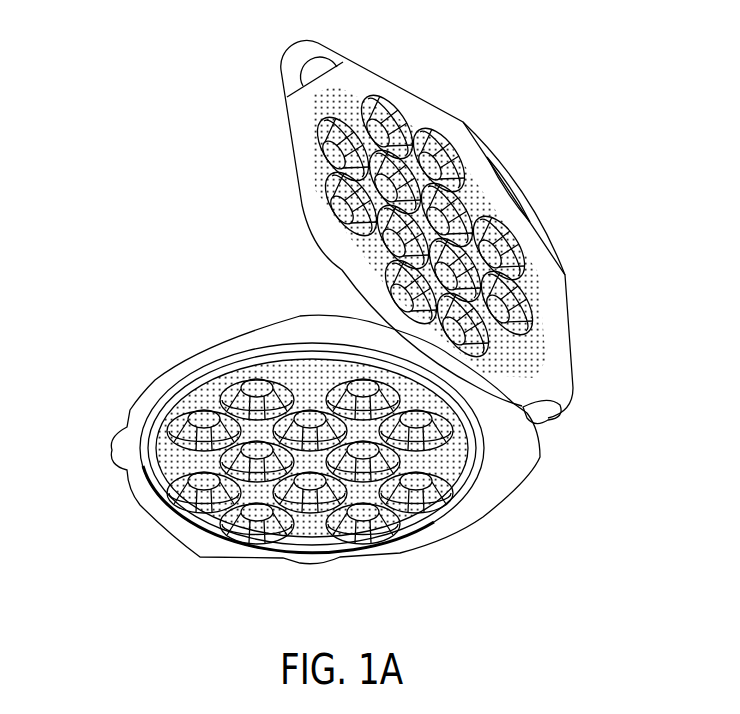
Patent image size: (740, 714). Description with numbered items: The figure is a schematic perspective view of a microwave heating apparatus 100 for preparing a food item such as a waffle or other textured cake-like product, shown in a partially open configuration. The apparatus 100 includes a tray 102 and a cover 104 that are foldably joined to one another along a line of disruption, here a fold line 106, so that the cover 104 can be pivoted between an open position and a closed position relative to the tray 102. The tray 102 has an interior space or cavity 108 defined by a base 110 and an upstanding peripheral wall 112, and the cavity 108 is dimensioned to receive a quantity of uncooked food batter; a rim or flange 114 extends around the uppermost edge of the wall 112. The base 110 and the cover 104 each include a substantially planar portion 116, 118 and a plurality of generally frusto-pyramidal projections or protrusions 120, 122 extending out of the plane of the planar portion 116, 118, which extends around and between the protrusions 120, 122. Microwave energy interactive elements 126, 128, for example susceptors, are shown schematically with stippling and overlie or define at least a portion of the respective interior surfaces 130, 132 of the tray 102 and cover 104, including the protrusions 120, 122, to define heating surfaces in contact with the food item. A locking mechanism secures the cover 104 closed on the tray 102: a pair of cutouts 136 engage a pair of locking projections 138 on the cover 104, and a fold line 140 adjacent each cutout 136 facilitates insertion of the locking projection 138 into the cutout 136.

The microwave heating apparatus 100 is at (612, 108).
The tray 102 is at (128, 300).
The cover 104 is at (214, 106).
The fold line 106 is at (545, 412).
The cavity 108 is at (218, 370).
The base 110 is at (160, 477).
The peripheral wall 112 is at (208, 380).
The flange 114 is at (327, 327).
The planar portion 116 is at (318, 386).
The planar portion 118 is at (305, 155).
The protrusions 120 is at (207, 425).
The protrusions 122 is at (338, 192).
The microwave energy interactive element 126 is at (463, 468).
The microwave energy interactive element 128 is at (523, 283).
The interior surface 130 is at (443, 409).
The interior surface 132 is at (523, 362).
The cutouts 136 is at (310, 66).
The locking projections 138 is at (113, 440).
The fold line 140 is at (340, 63).